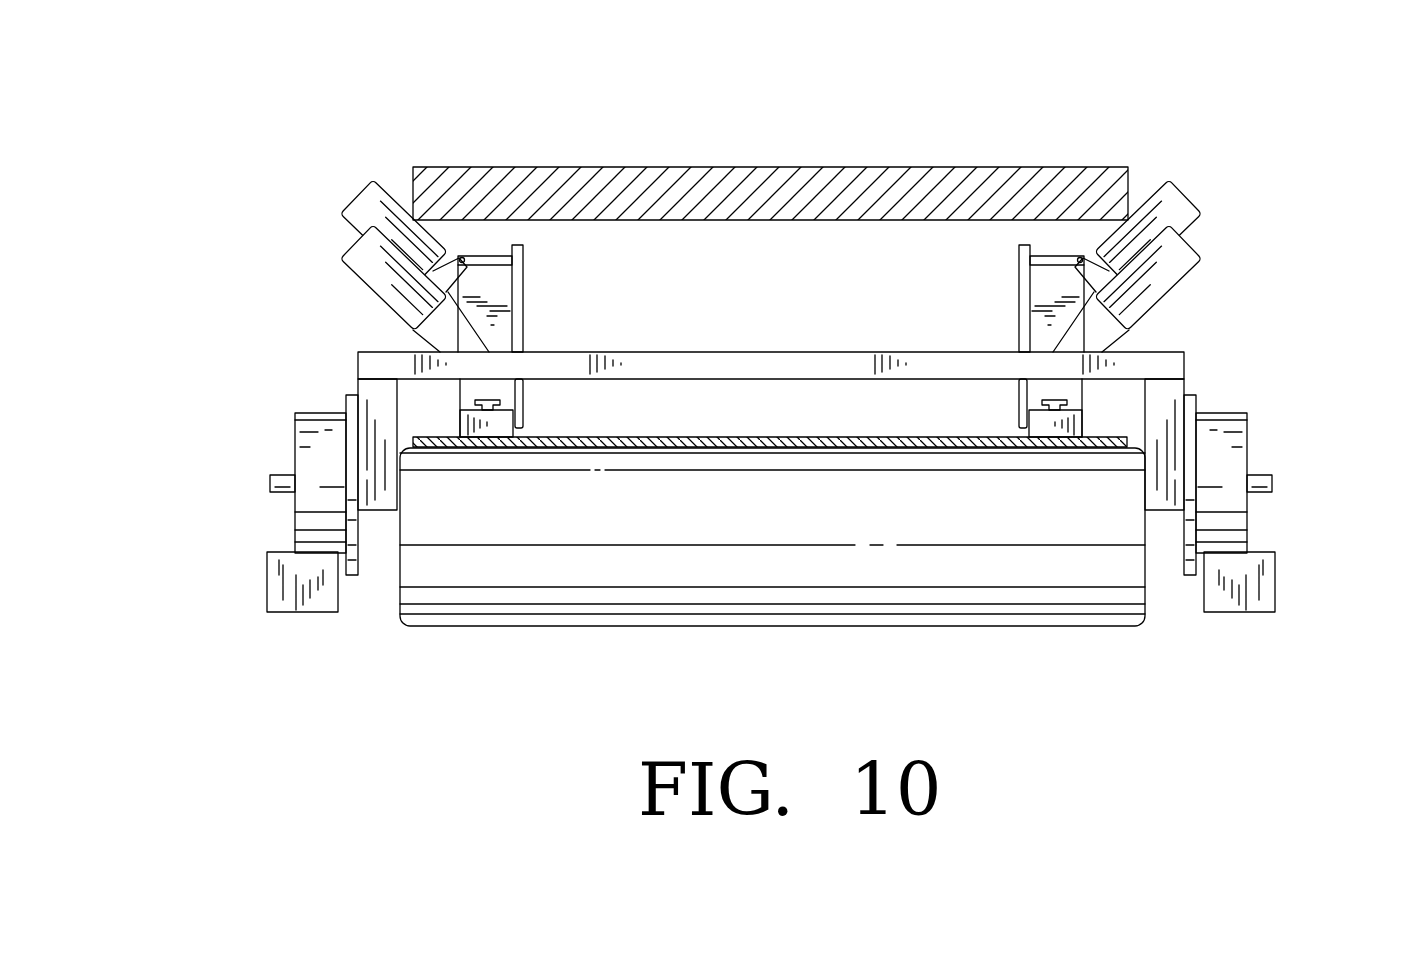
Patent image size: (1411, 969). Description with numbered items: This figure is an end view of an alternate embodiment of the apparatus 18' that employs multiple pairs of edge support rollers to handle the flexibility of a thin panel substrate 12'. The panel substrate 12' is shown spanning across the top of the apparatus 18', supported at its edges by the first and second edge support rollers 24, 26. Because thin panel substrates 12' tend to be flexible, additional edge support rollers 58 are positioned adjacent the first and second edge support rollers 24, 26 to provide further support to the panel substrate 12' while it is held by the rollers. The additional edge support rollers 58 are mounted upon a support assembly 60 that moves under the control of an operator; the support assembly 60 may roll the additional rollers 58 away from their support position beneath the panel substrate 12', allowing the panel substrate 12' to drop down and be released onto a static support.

The thin panel substrate 12' is at (770, 130).
The apparatus 18' is at (677, 435).
The first edge support roller 24 is at (360, 188).
The second edge support roller 26 is at (1198, 203).
The additional edge support roller 58 is at (343, 280).
The support assembly 60 is at (1184, 372).